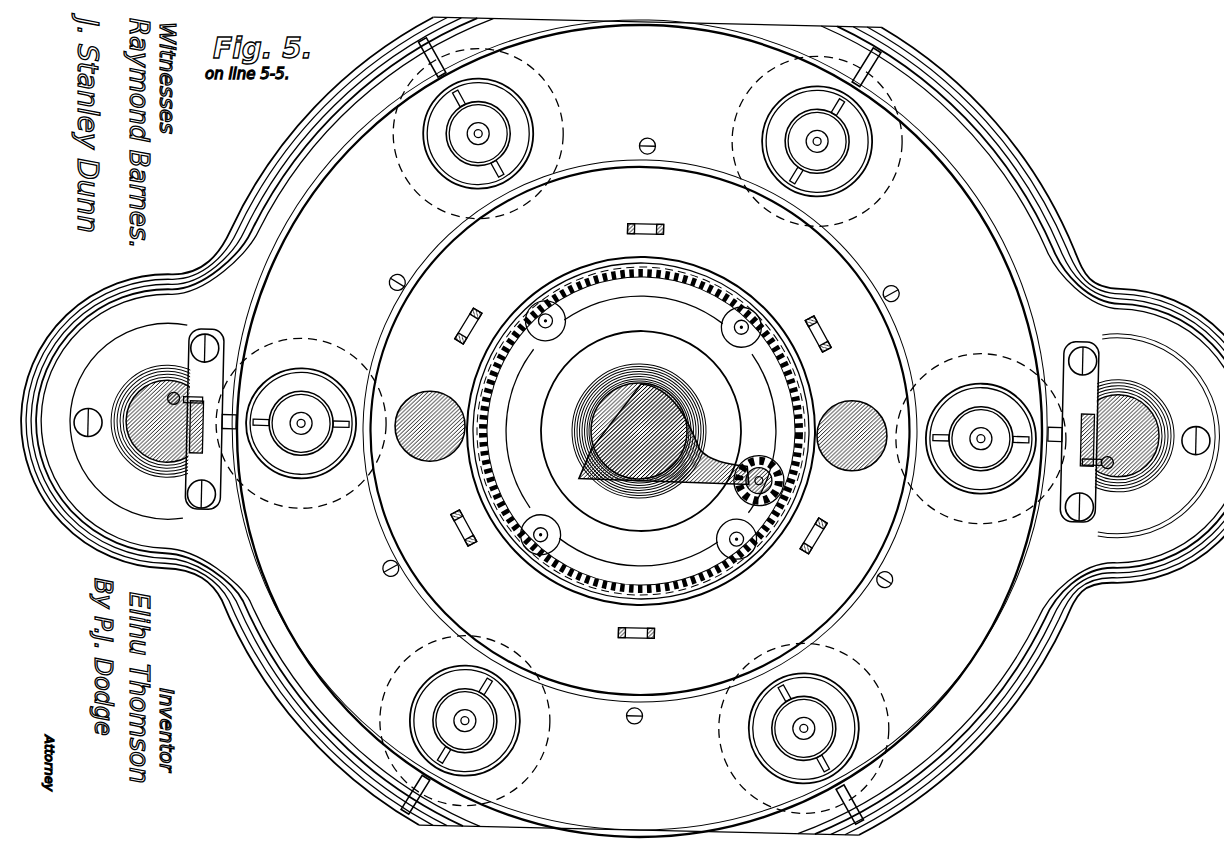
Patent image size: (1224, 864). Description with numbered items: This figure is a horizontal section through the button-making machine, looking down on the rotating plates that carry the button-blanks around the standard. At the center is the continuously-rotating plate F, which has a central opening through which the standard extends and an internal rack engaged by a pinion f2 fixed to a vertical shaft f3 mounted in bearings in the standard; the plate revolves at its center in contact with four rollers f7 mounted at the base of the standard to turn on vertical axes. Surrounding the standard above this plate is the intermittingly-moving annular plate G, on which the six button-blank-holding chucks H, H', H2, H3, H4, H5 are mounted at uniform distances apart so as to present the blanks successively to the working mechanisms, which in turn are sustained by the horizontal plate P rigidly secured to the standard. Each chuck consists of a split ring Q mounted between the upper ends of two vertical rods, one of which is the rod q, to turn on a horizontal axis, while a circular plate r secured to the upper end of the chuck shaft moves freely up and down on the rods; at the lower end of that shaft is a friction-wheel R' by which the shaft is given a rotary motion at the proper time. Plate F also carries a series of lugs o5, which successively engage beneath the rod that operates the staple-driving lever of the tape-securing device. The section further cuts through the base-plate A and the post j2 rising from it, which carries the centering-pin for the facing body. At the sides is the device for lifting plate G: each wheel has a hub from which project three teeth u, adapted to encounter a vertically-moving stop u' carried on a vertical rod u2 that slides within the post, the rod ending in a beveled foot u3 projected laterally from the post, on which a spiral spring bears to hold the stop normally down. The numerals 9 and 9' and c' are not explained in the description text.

The base-plate A is at (939, 129).
The annular plate G is at (639, 428).
The continuously-rotating plate F is at (642, 397).
The screws 9 is at (646, 437).
The lugs 9' is at (650, 428).
The lugs o5 is at (644, 433).
The rollers f7 is at (538, 340).
The pinion f2 is at (673, 434).
The vertical shaft f3 is at (740, 492).
The central shaft c' is at (638, 430).
The horizontal plate P is at (641, 443).
The split ring Q is at (763, 145).
The friction-wheel R' is at (641, 431).
The button-blank-holding chuck H' is at (488, 133).
The button-blank-holding chuck H2 is at (865, 140).
The button-blank-holding chuck H3 is at (974, 370).
The button-blank-holding chuck H is at (301, 421).
The button-blank-holding chuck H5 is at (527, 717).
The button-blank-holding chuck H4 is at (858, 699).
The vertical rod q is at (264, 428).
The circular plate r is at (292, 416).
The post j2 is at (140, 455).
The teeth u is at (642, 425).
The stop u' is at (667, 411).
The vertical rod u2 is at (155, 401).
The beveled foot u3 is at (195, 407).